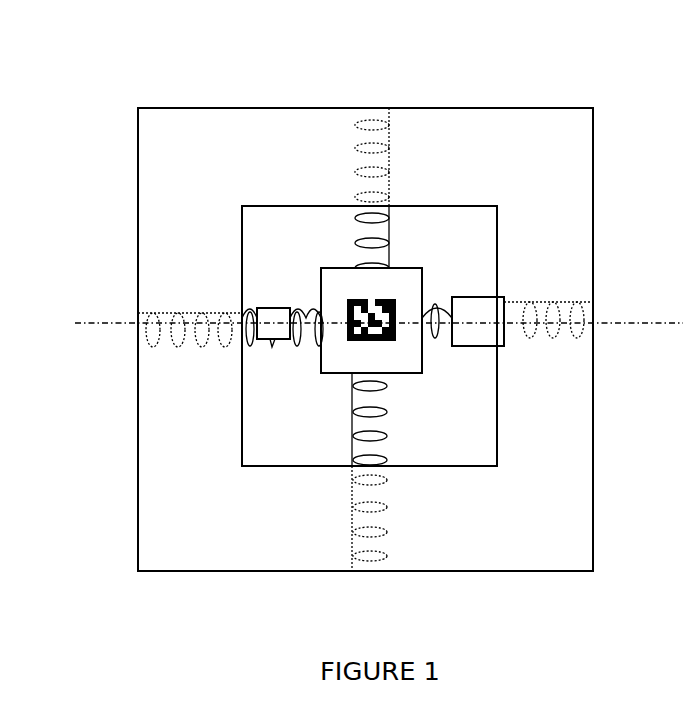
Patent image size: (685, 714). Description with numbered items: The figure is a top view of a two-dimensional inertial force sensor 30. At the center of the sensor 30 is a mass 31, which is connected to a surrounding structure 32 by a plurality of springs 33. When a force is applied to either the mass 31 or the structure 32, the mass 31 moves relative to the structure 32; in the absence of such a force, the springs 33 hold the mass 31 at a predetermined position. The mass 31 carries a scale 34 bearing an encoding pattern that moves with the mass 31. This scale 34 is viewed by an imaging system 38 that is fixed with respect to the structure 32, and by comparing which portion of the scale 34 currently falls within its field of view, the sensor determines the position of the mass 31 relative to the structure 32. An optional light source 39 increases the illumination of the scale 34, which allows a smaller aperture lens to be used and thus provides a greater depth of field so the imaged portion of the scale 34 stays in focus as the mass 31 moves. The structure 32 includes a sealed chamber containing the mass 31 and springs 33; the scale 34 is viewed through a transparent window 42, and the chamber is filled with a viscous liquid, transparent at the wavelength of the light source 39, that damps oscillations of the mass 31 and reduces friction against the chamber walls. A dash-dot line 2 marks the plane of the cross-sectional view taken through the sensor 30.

The sensor 30 is at (98, 81).
The structure 32 is at (593, 250).
The transparent window 42 is at (490, 234).
The mass 31 is at (322, 268).
The scale 34 is at (383, 301).
The light source 39 is at (283, 303).
The imaging system 38 is at (482, 333).
The springs 33 is at (389, 146).
The line 2- 2 is at (96, 336).